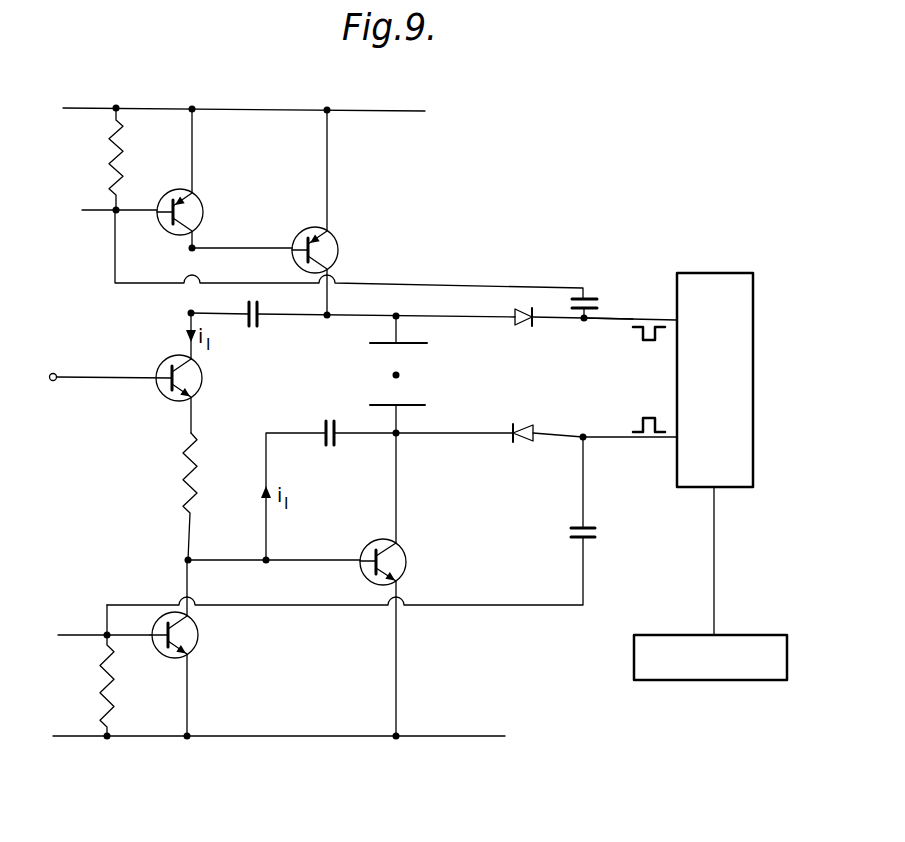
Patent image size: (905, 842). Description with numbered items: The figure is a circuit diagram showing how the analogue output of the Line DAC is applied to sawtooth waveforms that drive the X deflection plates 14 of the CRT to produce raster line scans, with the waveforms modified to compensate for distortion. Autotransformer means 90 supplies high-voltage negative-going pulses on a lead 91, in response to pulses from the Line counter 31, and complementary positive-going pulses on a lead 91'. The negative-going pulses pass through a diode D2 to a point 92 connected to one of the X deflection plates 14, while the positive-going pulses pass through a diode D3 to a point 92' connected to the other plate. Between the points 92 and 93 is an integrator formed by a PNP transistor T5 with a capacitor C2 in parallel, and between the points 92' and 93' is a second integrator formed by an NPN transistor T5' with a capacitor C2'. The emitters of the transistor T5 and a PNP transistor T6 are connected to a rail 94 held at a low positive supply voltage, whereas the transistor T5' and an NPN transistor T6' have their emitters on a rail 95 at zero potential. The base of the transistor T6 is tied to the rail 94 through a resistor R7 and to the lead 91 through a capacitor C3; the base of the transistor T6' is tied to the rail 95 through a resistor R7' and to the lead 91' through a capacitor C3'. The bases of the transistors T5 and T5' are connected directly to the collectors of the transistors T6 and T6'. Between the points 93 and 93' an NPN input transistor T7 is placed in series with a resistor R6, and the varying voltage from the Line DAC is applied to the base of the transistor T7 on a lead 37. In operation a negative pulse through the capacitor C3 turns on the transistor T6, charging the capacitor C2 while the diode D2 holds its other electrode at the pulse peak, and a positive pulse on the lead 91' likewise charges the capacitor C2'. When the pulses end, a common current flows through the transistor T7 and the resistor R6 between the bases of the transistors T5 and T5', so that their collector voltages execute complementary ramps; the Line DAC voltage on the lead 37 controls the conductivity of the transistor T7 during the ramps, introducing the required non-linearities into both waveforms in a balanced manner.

The rail 94 is at (385, 112).
The point 93 is at (188, 313).
The point 92 is at (419, 316).
The X deflection plates 14 is at (415, 346).
The lead 91 is at (607, 344).
The autotransformer means 90 is at (728, 282).
The lead 37 is at (124, 381).
The point 93' is at (246, 559).
The point 92' is at (426, 487).
The lead 91' is at (610, 481).
The Line counter 31 is at (676, 672).
The rail 95 is at (437, 738).
The resistor R7 is at (90, 161).
The resistor R7' is at (83, 685).
The resistor R6 is at (184, 470).
The PNP transistor T6 is at (207, 178).
The NPN transistor T6' is at (204, 648).
The PNP transistor T5 is at (346, 212).
The NPN transistor T5' is at (414, 637).
The NPN input transistor T7 is at (204, 381).
The capacitor C2 is at (281, 331).
The capacitor C2' is at (355, 454).
The capacitor C3 is at (603, 292).
The capacitor C3' is at (606, 551).
The diode D2 is at (525, 330).
The diode D3 is at (521, 447).